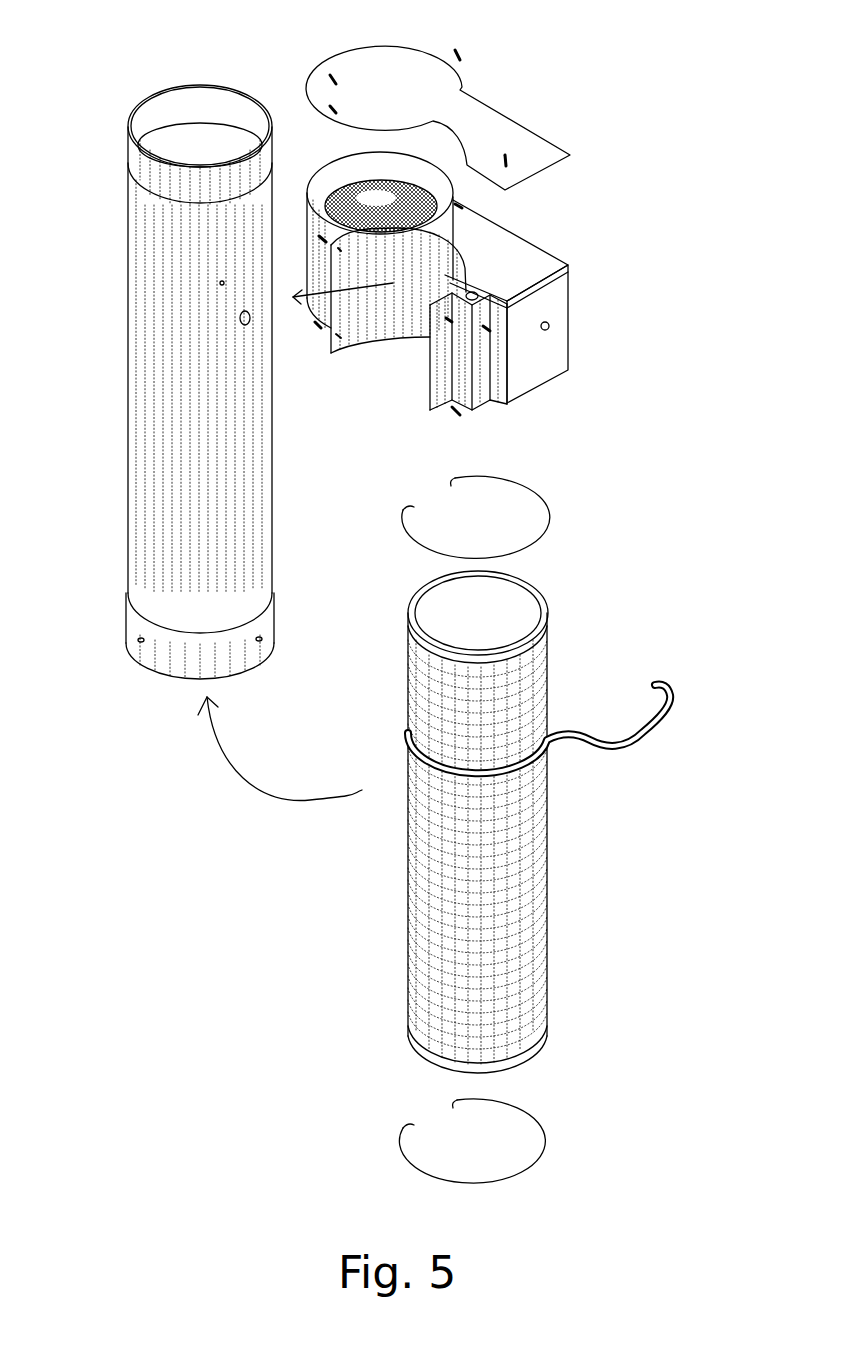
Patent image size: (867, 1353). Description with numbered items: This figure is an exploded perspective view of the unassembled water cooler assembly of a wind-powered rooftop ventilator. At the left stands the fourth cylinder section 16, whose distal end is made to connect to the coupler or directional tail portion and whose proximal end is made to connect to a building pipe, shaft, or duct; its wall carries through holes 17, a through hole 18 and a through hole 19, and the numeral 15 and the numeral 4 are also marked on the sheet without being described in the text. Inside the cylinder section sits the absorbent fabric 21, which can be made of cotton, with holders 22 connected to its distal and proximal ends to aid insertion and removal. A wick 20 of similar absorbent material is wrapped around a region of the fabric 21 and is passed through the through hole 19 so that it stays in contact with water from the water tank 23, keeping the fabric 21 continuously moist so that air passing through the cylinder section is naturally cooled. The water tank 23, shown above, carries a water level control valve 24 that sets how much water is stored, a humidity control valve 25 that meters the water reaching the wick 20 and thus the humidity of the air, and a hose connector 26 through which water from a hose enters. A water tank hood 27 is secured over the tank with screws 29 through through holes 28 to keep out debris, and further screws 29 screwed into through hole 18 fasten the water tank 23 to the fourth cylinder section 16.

The mounting plate 4 is at (473, 230).
The outer tube 15 is at (150, 390).
The fourth cylinder section 16 is at (225, 365).
The through holes 17 is at (128, 650).
The through hole 18 is at (340, 338).
The through hole 19 is at (238, 318).
The wick 20 is at (668, 684).
The fabric 21 is at (535, 660).
The holders 22 is at (543, 500).
The water tank 23 is at (565, 287).
The water level control valve 24 is at (392, 185).
The humidity control valve 25 is at (473, 290).
The hose connector 26 is at (549, 327).
The water tank hood 27 is at (480, 118).
The through holes 28 is at (462, 201).
The screws 29 is at (458, 52).